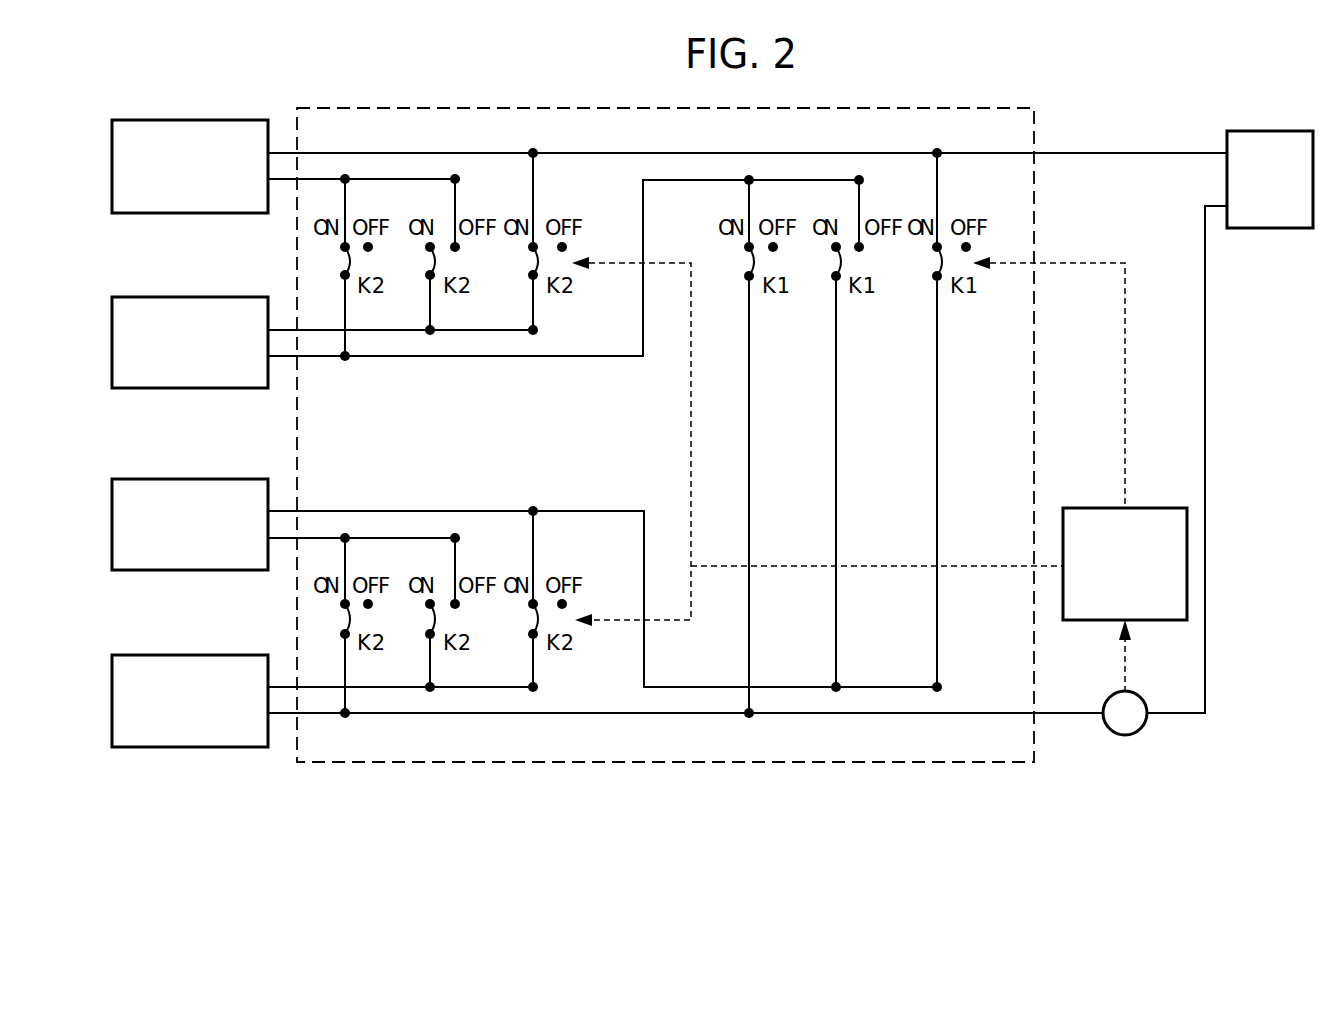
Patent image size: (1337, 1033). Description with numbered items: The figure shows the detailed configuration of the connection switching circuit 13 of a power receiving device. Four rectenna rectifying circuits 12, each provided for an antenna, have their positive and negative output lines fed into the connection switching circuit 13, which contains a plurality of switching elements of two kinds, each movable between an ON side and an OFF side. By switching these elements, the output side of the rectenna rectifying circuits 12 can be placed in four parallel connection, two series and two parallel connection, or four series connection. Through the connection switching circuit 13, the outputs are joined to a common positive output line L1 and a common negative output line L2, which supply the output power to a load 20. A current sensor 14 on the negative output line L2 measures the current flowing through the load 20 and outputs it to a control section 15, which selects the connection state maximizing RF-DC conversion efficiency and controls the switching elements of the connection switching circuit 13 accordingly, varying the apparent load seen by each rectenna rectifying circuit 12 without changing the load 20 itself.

The rectenna rectifying circuit 12 is at (197, 120).
The connection switching circuit 13 is at (820, 763).
The current sensor 14 is at (1136, 694).
The control section 15 is at (1143, 508).
The load 20 is at (1250, 131).
The positive output line L1 is at (1138, 153).
The negative output line L2 is at (1065, 713).